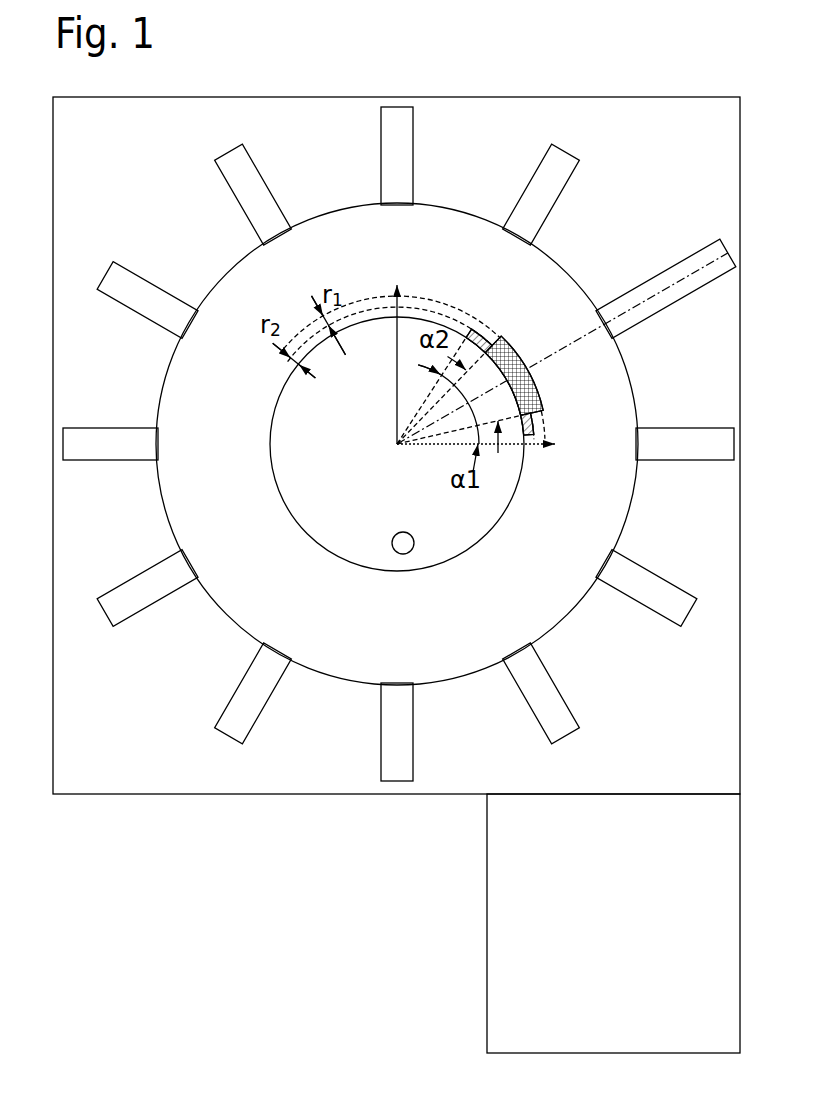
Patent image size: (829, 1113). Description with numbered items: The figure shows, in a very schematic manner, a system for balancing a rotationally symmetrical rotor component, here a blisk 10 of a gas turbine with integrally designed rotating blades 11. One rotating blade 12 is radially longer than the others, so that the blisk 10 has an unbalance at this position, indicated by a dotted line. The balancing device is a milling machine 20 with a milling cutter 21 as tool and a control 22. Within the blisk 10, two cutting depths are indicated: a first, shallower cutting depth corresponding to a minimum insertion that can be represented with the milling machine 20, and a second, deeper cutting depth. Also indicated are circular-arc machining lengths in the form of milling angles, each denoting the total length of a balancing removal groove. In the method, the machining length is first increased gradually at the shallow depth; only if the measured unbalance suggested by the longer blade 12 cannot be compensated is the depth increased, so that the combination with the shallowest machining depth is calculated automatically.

The blisk 10 is at (397, 444).
The rotating blades 11 is at (76, 428).
The rotating blade 12 is at (677, 262).
The milling machine 20 is at (598, 96).
The milling cutter 21 is at (392, 542).
The control 22 is at (613, 923).